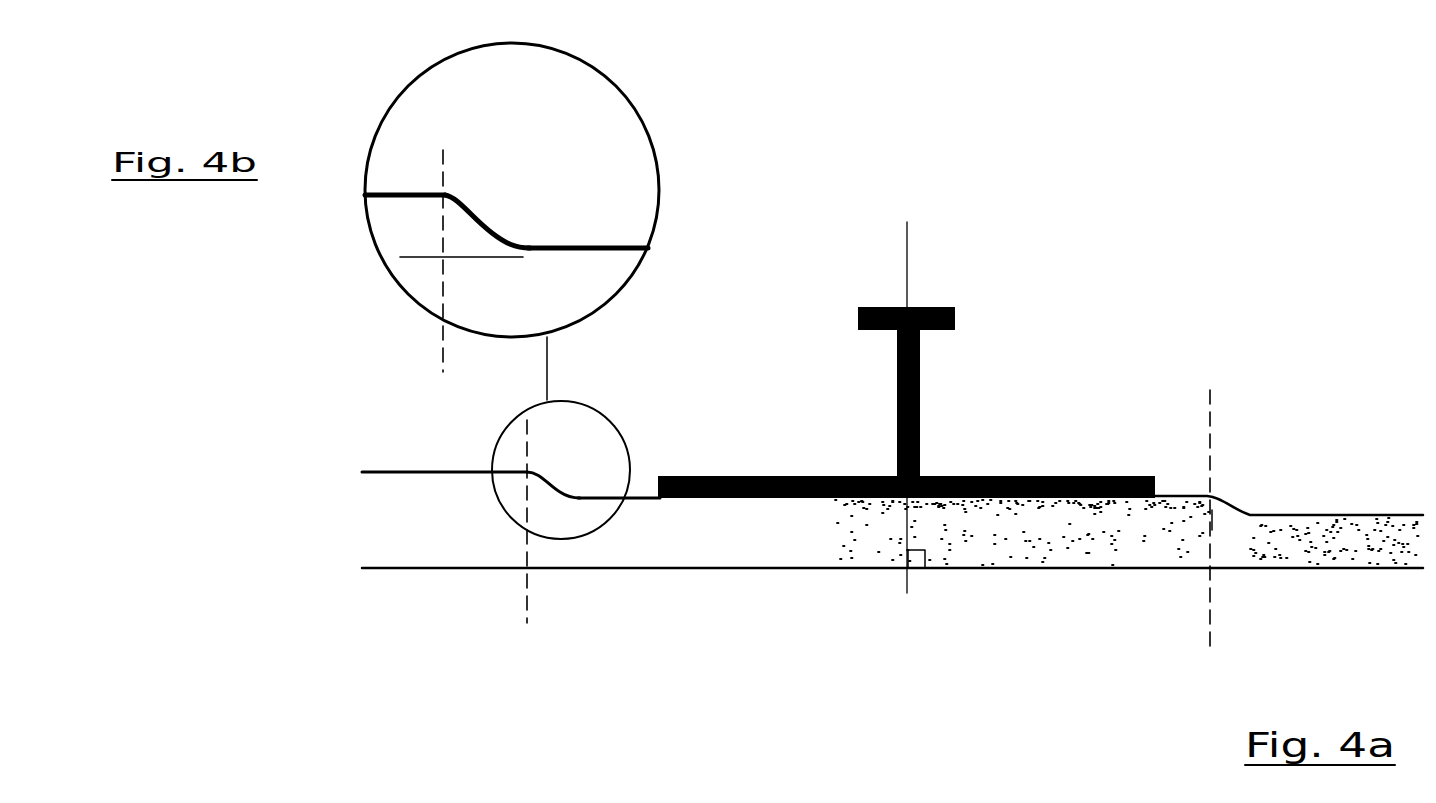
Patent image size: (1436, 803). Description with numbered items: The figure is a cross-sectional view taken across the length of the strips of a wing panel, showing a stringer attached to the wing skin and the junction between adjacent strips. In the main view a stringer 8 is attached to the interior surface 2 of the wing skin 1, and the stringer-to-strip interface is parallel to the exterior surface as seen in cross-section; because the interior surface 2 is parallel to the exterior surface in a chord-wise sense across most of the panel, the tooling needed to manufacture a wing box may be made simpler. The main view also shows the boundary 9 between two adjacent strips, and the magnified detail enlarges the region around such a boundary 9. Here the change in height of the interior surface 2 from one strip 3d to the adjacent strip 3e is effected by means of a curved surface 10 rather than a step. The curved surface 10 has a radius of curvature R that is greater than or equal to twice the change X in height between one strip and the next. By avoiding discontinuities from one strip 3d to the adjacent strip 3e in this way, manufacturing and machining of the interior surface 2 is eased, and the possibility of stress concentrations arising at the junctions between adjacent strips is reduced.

In FIG. 4A, the wing skin 1 is at (717, 545).
In FIG. 4A, the interior surface 2 is at (1187, 489).
In FIG. 4B, the strip 3d is at (392, 215).
In FIG. 4A, the strip 3d is at (410, 548).
In FIG. 4B, the adjacent strip 3e is at (550, 315).
In FIG. 4A, the adjacent strip 3e is at (630, 553).
In FIG. 4A, the stringer 8 is at (938, 307).
In FIG. 4A, the boundary 9 is at (521, 602).
In FIG. 4B, the curved surface 10 is at (475, 220).
In FIG. 4B, the radius of curvature R is at (471, 196).
In FIG. 4B, the change in height X is at (425, 147).